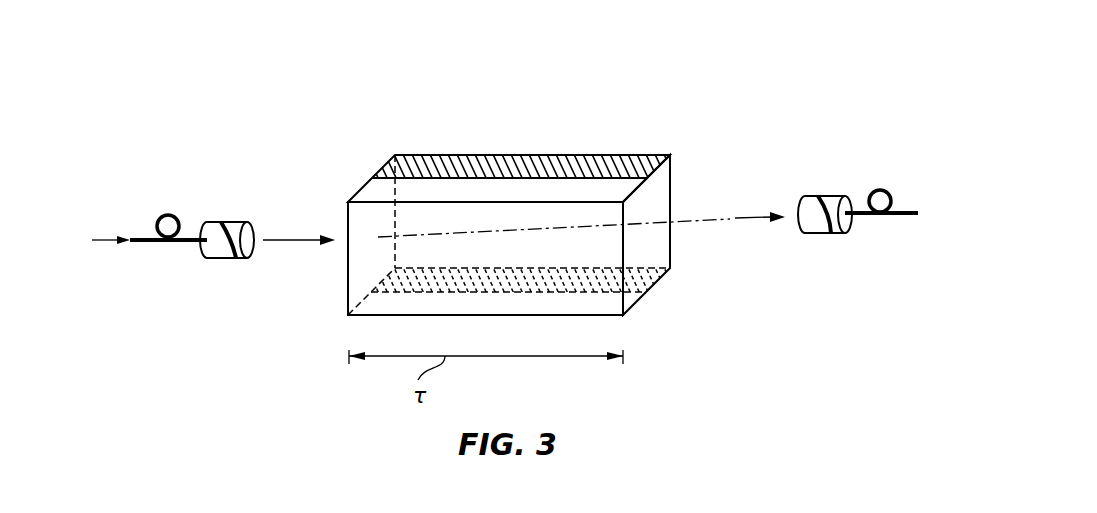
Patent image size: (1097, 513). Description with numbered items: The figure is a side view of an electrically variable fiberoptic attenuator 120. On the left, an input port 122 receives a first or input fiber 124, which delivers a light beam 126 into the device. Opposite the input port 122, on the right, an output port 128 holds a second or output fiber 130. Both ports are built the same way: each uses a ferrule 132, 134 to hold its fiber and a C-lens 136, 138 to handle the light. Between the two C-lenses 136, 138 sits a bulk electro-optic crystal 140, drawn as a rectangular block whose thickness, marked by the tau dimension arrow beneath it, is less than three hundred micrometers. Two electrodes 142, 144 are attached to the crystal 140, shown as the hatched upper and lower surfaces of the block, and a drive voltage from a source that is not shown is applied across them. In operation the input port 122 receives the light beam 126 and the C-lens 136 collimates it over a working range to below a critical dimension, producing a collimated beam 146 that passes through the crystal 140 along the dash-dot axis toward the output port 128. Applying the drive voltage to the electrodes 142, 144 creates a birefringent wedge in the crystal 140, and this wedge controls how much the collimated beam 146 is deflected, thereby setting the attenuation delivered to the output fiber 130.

The electrically variable fiberoptic attenuator 120 is at (655, 77).
The input port 122 is at (227, 162).
The input fiber 124 is at (160, 211).
The light beam 126 is at (102, 242).
The output port 128 is at (811, 132).
The output fiber 130 is at (880, 188).
The ferrule 132 is at (203, 260).
The ferrule 134 is at (845, 236).
The C-lens 136 is at (252, 260).
The C-lens 138 is at (800, 236).
The bulk electro-optic crystal 140 is at (347, 285).
The electrode 142 is at (520, 154).
The electrode 144 is at (660, 277).
The collimated beam 146 is at (287, 237).